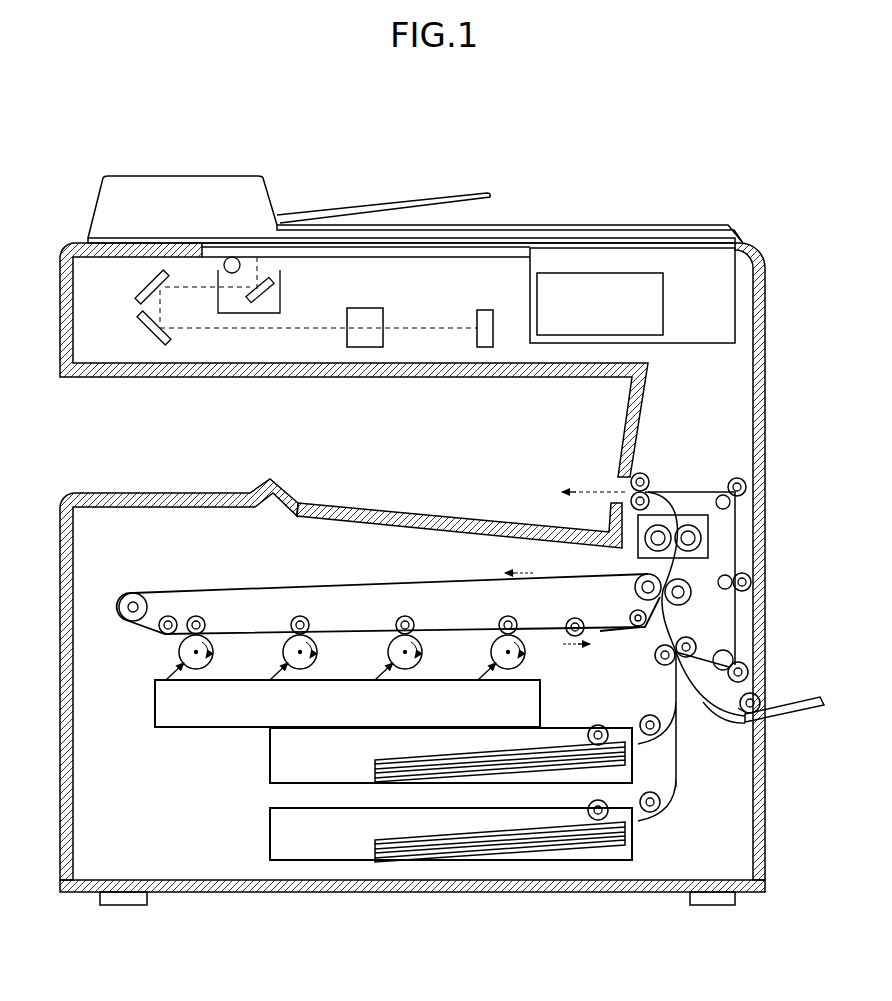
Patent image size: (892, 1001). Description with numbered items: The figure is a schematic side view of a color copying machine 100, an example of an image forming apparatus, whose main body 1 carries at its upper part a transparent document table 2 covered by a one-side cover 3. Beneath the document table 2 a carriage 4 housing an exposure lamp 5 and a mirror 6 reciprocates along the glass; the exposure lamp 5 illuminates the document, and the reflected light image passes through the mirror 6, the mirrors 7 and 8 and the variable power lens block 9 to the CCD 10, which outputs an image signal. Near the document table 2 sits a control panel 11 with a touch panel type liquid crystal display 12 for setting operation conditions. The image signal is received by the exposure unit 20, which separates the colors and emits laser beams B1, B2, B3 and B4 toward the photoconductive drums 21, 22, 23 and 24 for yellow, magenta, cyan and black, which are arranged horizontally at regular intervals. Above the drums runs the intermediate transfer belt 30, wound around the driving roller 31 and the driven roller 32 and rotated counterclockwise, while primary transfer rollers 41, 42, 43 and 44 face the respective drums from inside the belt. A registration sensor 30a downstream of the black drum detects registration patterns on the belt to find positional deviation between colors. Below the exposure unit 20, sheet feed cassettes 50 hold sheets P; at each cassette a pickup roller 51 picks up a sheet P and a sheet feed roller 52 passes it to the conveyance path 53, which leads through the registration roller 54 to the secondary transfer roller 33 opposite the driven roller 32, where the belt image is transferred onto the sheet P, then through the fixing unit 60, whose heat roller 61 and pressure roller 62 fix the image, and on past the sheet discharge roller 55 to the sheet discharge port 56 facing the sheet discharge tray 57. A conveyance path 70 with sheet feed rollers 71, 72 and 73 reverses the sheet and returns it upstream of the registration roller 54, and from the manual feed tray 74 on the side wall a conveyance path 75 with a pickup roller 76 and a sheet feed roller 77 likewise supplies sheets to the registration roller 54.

The color copying machine 100 is at (666, 178).
The main body 1 is at (768, 285).
The document table 2 is at (418, 259).
The cover 3 is at (577, 224).
The carriage 4 is at (281, 271).
The exposure lamp 5 is at (224, 260).
The mirror 6 is at (272, 296).
The mirror 7 is at (149, 279).
The mirror 8 is at (145, 330).
The variable power lens block 9 is at (363, 307).
The CCD 10 is at (486, 309).
The control panel 11 is at (711, 350).
The liquid crystal display 12 is at (650, 343).
The exposure unit 20 is at (153, 707).
The photoconductive drum 21 is at (214, 650).
The photoconductive drum 22 is at (318, 651).
The photoconductive drum 23 is at (423, 651).
The photoconductive drum 24 is at (526, 655).
The intermediate transfer belt 30 is at (403, 576).
The registration sensor 30a is at (622, 632).
The driving roller 31 is at (118, 601).
The driven roller 32 is at (634, 592).
The secondary transfer roller 33 is at (684, 603).
The primary transfer roller 41 is at (203, 617).
The primary transfer roller 42 is at (292, 620).
The primary transfer roller 43 is at (396, 620).
The primary transfer roller 44 is at (499, 620).
The sheet feed cassette 50 is at (268, 775).
The pickup roller 51 is at (598, 725).
The sheet feed roller 52 is at (643, 717).
The conveyance path 53 is at (683, 684).
The registration roller 54 is at (667, 665).
The sheet discharge roller 55 is at (646, 474).
The sheet discharge port 56 is at (613, 483).
The sheet discharge tray 57 is at (433, 514).
The fixing unit 60 is at (713, 536).
The heat roller 61 is at (640, 538).
The pressure roller 62 is at (690, 553).
The conveyance path 70 is at (697, 489).
The sheet feed roller 71 is at (737, 477).
The sheet feed roller 72 is at (752, 581).
The sheet feed roller 73 is at (749, 668).
The manual feed tray 74 is at (788, 715).
The conveyance path 75 is at (717, 712).
The pickup roller 76 is at (760, 700).
The sheet feed roller 77 is at (747, 711).
The laser beam B1 is at (166, 679).
The laser beam B2 is at (270, 679).
The laser beam B3 is at (375, 680).
The laser beam B4 is at (478, 680).
The sheet P is at (405, 761).